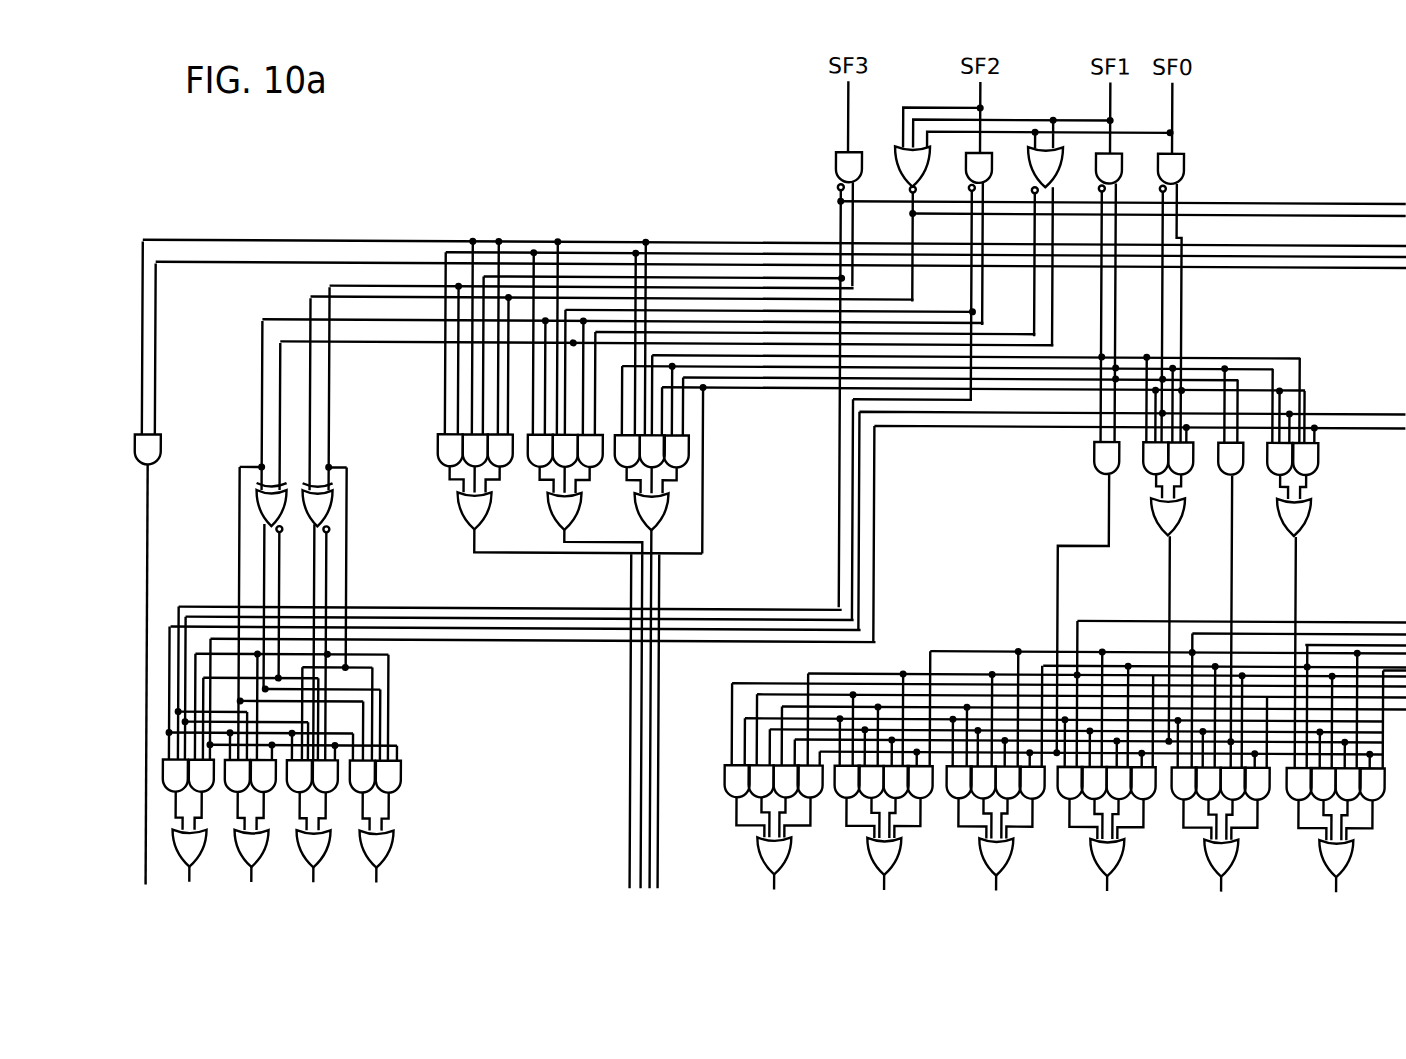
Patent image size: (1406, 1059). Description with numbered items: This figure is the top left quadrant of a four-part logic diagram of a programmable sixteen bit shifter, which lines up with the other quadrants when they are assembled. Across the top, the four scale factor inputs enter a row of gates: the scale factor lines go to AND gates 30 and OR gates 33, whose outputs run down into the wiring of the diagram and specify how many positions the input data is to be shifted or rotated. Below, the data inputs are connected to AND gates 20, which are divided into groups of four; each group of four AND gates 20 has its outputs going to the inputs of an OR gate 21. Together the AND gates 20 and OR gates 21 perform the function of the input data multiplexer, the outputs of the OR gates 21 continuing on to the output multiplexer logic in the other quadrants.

The AND gate 20 is at (735, 799).
The OR gate 21 is at (866, 847).
The AND gate 30 is at (836, 177).
The OR gate 33 is at (929, 182).